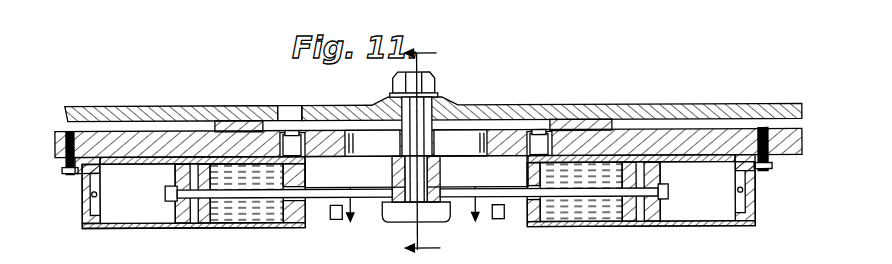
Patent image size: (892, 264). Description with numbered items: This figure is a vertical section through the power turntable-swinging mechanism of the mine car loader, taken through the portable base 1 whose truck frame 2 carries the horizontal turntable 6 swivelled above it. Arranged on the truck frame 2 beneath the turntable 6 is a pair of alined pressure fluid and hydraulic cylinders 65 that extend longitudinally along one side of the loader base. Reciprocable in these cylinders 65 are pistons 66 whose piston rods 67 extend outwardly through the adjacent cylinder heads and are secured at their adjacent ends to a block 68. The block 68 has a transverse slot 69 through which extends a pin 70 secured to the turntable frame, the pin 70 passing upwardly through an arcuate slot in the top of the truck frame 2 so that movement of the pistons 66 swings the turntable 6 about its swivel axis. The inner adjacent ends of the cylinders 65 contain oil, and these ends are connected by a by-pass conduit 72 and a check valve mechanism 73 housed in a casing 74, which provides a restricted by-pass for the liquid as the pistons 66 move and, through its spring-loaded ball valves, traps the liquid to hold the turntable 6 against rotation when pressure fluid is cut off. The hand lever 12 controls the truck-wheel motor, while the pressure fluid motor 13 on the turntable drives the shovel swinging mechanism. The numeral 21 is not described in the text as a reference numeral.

The portable base 1 is at (58, 148).
The truck frame 2 is at (118, 136).
The horizontal turntable 6 is at (714, 108).
The hand lever 12 is at (432, 154).
The pressure fluid motor 13 is at (416, 220).
The body member 21 is at (360, 143).
The pressure fluid and hydraulic cylinders 65 is at (156, 228).
The pistons 66 is at (195, 228).
The piston rods 67 is at (268, 206).
The block 68 is at (392, 174).
The transverse slot 69 is at (440, 174).
The pin 70 is at (420, 132).
The by-pass conduit 72 is at (338, 219).
The check valve mechanism 73 is at (410, 223).
The casing 74 is at (440, 208).